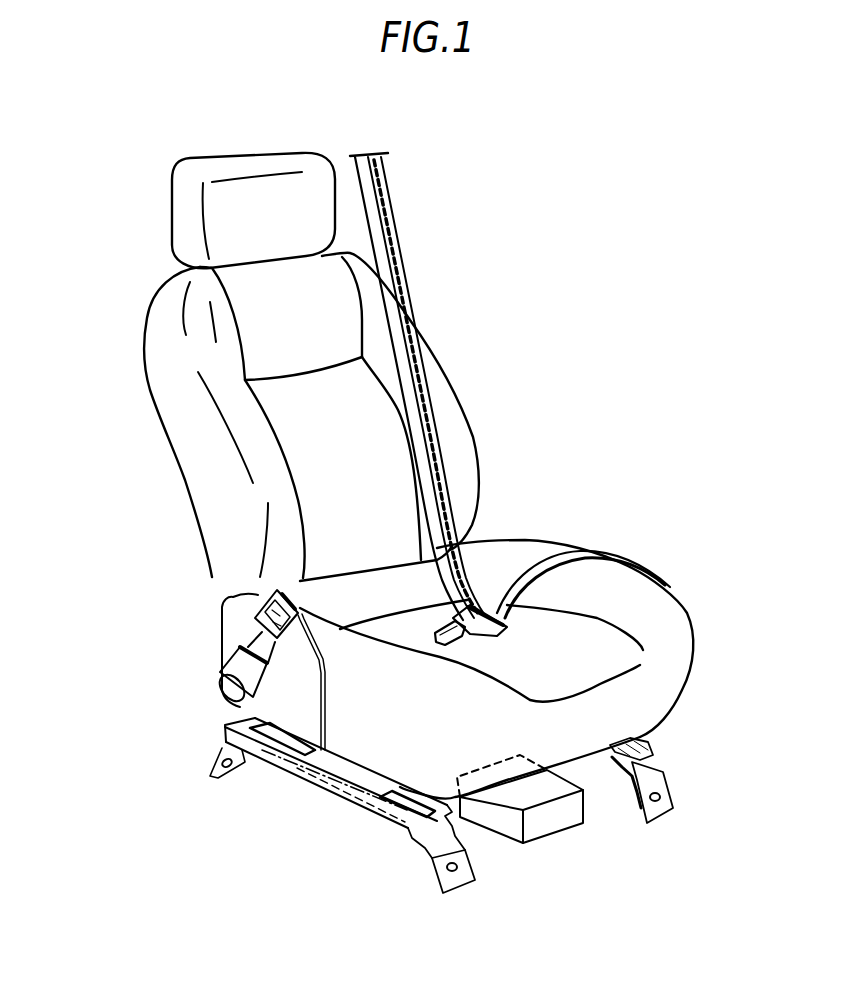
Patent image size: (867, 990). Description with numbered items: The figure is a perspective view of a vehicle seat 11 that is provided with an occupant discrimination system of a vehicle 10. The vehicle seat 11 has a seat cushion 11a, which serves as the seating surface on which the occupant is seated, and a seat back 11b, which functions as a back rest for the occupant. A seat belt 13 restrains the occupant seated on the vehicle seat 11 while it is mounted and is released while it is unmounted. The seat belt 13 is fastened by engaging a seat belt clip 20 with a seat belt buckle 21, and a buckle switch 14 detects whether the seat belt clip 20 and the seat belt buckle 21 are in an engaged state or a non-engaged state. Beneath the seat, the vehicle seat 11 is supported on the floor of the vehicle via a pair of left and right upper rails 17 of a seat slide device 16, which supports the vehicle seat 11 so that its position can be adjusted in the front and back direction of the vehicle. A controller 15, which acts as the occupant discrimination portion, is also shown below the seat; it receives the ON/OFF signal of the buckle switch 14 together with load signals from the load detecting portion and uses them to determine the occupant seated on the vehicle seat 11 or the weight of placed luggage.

The vehicle 10 is at (394, 476).
The vehicle seat 11 is at (506, 638).
The seat cushion 11a is at (667, 608).
The seat back 11b is at (177, 422).
The seat belt 13 is at (387, 217).
The buckle switch 14 is at (255, 625).
The controller 15 is at (550, 823).
The seat slide device 16 is at (657, 769).
The upper rails 17 is at (353, 782).
The seat belt clip 20 is at (507, 622).
The seat belt buckle 21 is at (262, 593).